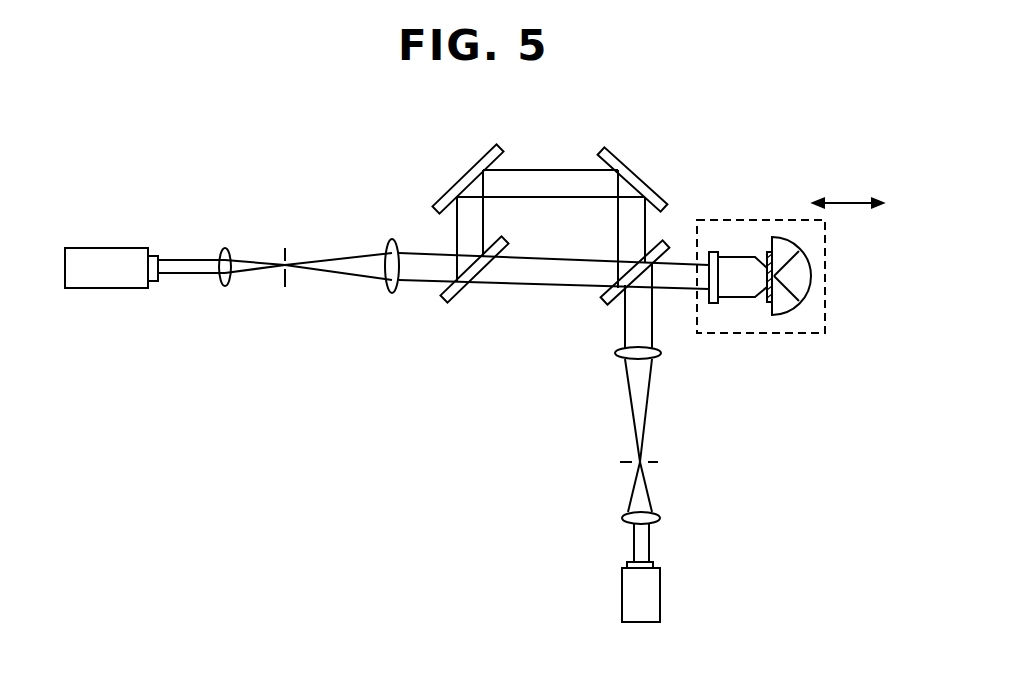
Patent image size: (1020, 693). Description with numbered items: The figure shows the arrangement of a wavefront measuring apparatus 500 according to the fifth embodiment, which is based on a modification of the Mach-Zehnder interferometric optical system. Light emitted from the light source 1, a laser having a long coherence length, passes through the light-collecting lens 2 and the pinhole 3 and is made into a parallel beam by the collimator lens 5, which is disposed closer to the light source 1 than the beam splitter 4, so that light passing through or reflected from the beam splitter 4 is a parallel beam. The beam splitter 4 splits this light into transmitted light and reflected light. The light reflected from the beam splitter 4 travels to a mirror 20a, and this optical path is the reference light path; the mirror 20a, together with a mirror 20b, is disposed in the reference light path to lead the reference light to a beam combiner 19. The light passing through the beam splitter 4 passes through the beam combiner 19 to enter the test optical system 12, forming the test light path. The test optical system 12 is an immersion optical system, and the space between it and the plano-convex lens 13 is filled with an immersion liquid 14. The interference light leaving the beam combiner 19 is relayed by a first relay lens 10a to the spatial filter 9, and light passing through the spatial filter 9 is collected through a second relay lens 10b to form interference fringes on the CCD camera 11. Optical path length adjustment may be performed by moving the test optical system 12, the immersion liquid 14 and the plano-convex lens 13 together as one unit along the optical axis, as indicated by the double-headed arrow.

The light source 1 is at (113, 258).
The light-collecting lens 2 is at (225, 248).
The pinhole 3 is at (285, 248).
The beam splitter 4 is at (445, 299).
The collimator lens 5 is at (392, 240).
The spatial filter 9 is at (658, 460).
The first relay lens 10a is at (662, 353).
The second relay lens 10b is at (660, 518).
The CCD camera 11 is at (655, 595).
The test optical system 12 is at (736, 265).
The plano-convex lens 13 is at (790, 306).
The immersion liquid 14 is at (770, 256).
The beam combiner 19 is at (605, 303).
The mirror 20a is at (455, 175).
The mirror 20b is at (630, 172).
The wavefront measuring apparatus 500 is at (478, 437).